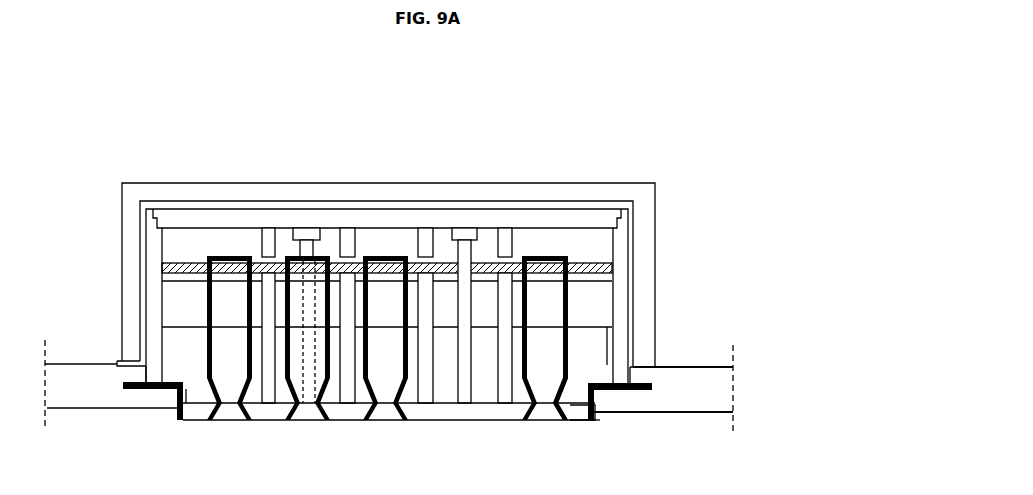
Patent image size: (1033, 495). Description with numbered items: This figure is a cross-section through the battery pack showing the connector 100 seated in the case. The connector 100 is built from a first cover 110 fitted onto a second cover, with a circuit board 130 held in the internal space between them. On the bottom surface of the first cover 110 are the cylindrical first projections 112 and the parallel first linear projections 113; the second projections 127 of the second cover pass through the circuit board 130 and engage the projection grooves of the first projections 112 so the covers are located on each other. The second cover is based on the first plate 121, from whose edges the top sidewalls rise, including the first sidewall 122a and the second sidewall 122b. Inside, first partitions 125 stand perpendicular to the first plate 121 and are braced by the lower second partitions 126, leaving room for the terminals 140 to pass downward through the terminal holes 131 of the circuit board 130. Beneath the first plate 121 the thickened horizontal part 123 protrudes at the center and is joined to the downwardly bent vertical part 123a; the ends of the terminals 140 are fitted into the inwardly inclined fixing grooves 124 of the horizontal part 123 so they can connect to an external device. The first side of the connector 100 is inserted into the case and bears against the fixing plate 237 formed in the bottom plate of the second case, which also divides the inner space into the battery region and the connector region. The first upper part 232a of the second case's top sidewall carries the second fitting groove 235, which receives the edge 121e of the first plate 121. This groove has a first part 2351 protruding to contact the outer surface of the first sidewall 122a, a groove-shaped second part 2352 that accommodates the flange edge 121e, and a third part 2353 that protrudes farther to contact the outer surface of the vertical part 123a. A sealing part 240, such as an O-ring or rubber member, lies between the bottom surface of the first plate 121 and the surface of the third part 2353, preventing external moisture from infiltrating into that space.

The connector 100 is at (709, 150).
The first cover 110 is at (540, 220).
The first projections 112 is at (324, 233).
The first linear projections 113 is at (268, 237).
The first plate 121 is at (182, 382).
The edge of first plate 121e is at (127, 392).
The first sidewall 122a is at (620, 303).
The second sidewall 122b is at (155, 228).
The horizontal part 123 is at (578, 413).
The vertical part 123a is at (532, 390).
The fixing grooves 124 is at (555, 414).
The first partitions 125 is at (587, 281).
The second partitions 126 is at (603, 332).
The second projections 127 is at (470, 250).
The circuit board 130 is at (600, 263).
The terminal holes 131 is at (388, 257).
The terminals 140 is at (197, 296).
The first upper part 232a is at (73, 400).
The second fitting groove 235 is at (812, 368).
The first part 2351 is at (647, 374).
The second part 2352 is at (652, 387).
The third part 2353 is at (637, 402).
The fixing plate 237 is at (592, 190).
The sealing part 240 is at (628, 393).